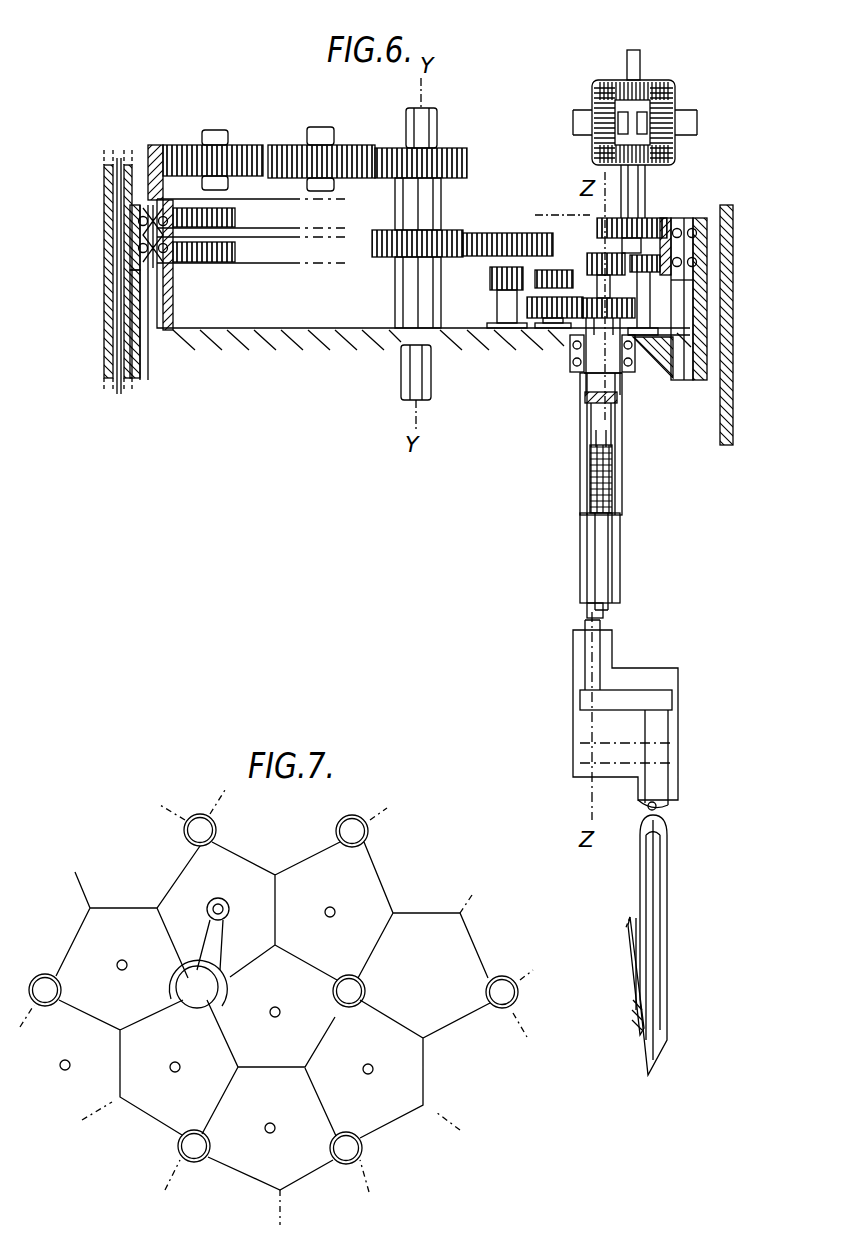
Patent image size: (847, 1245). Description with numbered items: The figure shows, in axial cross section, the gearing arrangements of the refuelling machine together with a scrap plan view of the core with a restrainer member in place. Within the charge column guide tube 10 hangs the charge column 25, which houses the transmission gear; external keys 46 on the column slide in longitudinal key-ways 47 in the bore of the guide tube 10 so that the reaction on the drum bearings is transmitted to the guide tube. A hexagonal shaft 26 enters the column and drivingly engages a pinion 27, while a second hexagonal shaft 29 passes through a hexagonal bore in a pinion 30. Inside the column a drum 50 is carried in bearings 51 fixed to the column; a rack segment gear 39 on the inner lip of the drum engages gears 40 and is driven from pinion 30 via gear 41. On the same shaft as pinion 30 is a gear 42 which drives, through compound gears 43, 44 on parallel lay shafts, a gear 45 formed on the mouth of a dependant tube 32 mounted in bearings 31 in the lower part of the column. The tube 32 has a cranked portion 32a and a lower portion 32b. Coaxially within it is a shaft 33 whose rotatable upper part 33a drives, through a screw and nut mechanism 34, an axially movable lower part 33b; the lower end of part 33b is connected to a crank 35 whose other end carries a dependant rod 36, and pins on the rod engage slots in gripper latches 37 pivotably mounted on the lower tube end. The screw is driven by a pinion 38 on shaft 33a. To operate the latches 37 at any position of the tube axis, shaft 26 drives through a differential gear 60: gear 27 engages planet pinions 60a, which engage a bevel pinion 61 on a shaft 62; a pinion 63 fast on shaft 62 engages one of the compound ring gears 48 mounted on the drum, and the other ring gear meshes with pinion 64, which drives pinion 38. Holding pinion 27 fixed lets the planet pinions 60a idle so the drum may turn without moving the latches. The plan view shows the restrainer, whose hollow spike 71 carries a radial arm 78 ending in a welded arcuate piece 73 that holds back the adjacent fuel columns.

In FIG. 6, the charge column guide tube 10 is at (104, 292).
In FIG. 6, the charge column 25 is at (130, 378).
In FIG. 6, the hexagonal shaft 26 is at (697, 248).
In FIG. 6, the pinion 27 is at (647, 77).
In FIG. 6, the second dependent shaft 29 is at (437, 122).
In FIG. 6, the pinion 30 is at (455, 150).
In FIG. 6, the bearings 31 is at (623, 377).
In FIG. 6, the dependant tube 32 is at (575, 378).
In FIG. 6, the cranked portion 32a is at (620, 665).
In FIG. 6, the lower portion of the tube 32b is at (667, 860).
In FIG. 6, the shaft 33 is at (592, 292).
In FIG. 6, the rotatable upper part of the shaft 33a is at (622, 447).
In FIG. 6, the axially movable lower part of the shaft 33b is at (600, 556).
In FIG. 6, the screw and nut mechanism 34 is at (620, 478).
In FIG. 6, the crank 35 is at (643, 688).
In FIG. 6, the dependant rod 36 is at (672, 800).
In FIG. 6, the gripper latches 37 is at (663, 987).
In FIG. 6, the pinion 38 is at (595, 255).
In FIG. 6, the rack segment gear 39 is at (162, 175).
In FIG. 6, the gears 40 is at (243, 145).
In FIG. 6, the gear 41 is at (283, 145).
In FIG. 6, the gear 42 is at (378, 262).
In FIG. 6, the compound gear 43 is at (487, 265).
In FIG. 6, the compound gear 44 is at (537, 298).
In FIG. 6, the gear 45 is at (575, 322).
In FIG. 6, the external keys 46 is at (124, 235).
In FIG. 6, the key-ways 47 is at (112, 322).
In FIG. 6, the compound ring gears 48 is at (707, 214).
In FIG. 6, the drum 50 is at (155, 145).
In FIG. 6, the bearings 51 is at (140, 205).
In FIG. 6, the differential gear 60 is at (684, 92).
In FIG. 6, the planet pinions 60a is at (672, 107).
In FIG. 6, the bevel pinion 61 is at (672, 157).
In FIG. 6, the shaft 62 is at (646, 185).
In FIG. 6, the pinion 63 is at (662, 215).
In FIG. 6, the pinion 64 is at (658, 282).
In FIG. 7, the hollow spike 71 is at (221, 898).
In FIG. 7, the arcuate piece 73 is at (177, 973).
In FIG. 7, the radial arm 78 is at (213, 942).